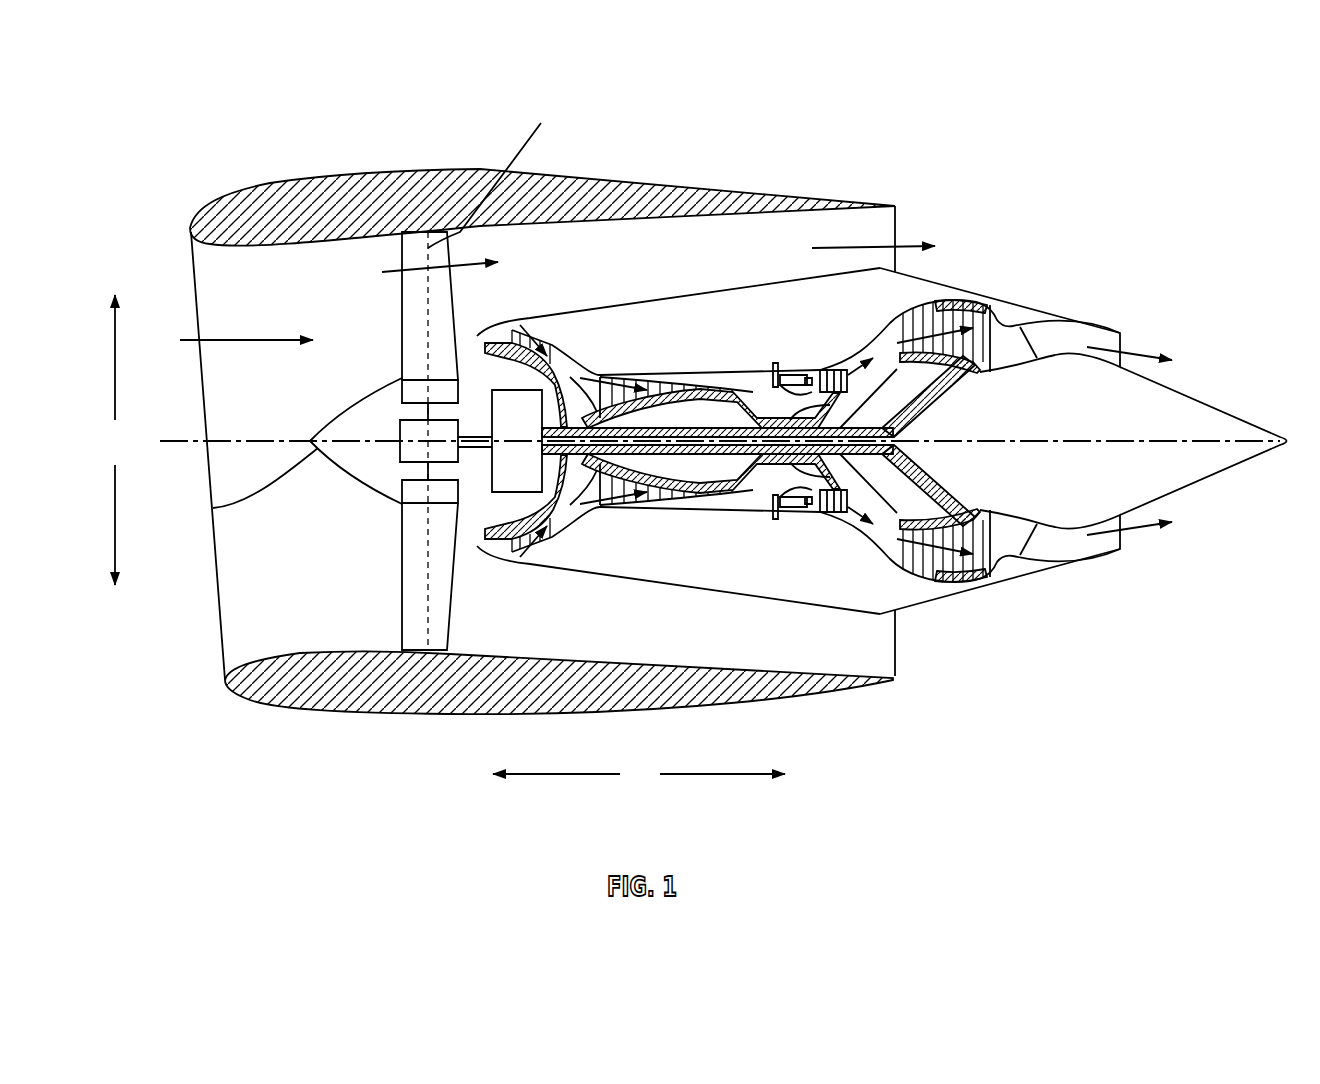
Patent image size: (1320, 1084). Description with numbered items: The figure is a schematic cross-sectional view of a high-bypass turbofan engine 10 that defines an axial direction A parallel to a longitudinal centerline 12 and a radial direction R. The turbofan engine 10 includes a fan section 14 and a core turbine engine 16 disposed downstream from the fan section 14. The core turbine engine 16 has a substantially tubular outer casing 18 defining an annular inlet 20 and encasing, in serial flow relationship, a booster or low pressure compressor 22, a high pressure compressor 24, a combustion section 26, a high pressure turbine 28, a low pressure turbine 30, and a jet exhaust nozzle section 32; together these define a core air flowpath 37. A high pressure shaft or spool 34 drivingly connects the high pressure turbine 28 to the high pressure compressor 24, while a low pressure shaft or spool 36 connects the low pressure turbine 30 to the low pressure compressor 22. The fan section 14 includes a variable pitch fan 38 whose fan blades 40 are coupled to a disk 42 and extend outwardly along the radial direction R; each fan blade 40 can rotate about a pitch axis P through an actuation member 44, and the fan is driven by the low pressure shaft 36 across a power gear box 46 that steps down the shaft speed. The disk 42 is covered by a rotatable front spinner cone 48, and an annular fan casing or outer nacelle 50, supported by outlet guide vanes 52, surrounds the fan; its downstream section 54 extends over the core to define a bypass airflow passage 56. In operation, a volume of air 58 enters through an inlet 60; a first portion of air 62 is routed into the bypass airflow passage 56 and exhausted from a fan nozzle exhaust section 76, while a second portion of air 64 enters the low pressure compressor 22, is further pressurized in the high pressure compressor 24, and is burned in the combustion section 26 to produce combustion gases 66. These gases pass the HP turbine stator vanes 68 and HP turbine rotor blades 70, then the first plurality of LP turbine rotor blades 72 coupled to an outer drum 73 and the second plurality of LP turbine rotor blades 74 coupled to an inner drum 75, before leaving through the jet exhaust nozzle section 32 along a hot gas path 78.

The turbofan engine 10 is at (1035, 190).
The longitudinal centerline 12 is at (1233, 443).
The fan section 14 is at (446, 136).
The core turbine engine 16 is at (758, 332).
The outer casing 18 is at (752, 605).
The annular inlet 20 is at (500, 545).
The booster or low pressure compressor 22 is at (552, 527).
The high pressure compressor 24 is at (622, 502).
The combustion section 26 is at (793, 508).
The high pressure turbine 28 is at (860, 513).
The low pressure turbine 30 is at (975, 565).
The jet exhaust nozzle section 32 is at (1037, 556).
The high pressure shaft or spool 34 is at (830, 398).
The low pressure shaft or spool 36 is at (897, 427).
The core air flowpath 37 is at (582, 512).
The variable pitch fan 38 is at (367, 495).
The fan blades 40 is at (402, 593).
The disk 42 is at (418, 395).
The actuation member 44 is at (397, 424).
The power gear box 46 is at (542, 390).
The rotatable front spinner cone 48 is at (213, 508).
The annular fan casing or outer nacelle 50 is at (447, 714).
The outlet guide vanes 52 is at (591, 248).
The downstream section of the nacelle 54 is at (814, 206).
The bypass airflow passage 56 is at (687, 265).
The volume of air 58 is at (242, 338).
The inlet 60 is at (224, 650).
The first portion of air 62 is at (415, 262).
The second portion of air 64 is at (490, 325).
The combustion gases 66 is at (930, 313).
The HP turbine stator vanes 68 is at (805, 512).
The HP turbine rotor blades 70 is at (860, 489).
The first plurality of LP turbine rotor blades 72 is at (900, 555).
The outer drum 73 is at (970, 303).
The second plurality of LP turbine rotor blades 74 is at (903, 557).
The inner drum 75 is at (890, 520).
The fan nozzle exhaust section 76 is at (883, 230).
The hot gas path 78 is at (886, 352).
The pitch axis P is at (491, 171).
The radial direction R is at (113, 440).
The axial direction A is at (639, 774).